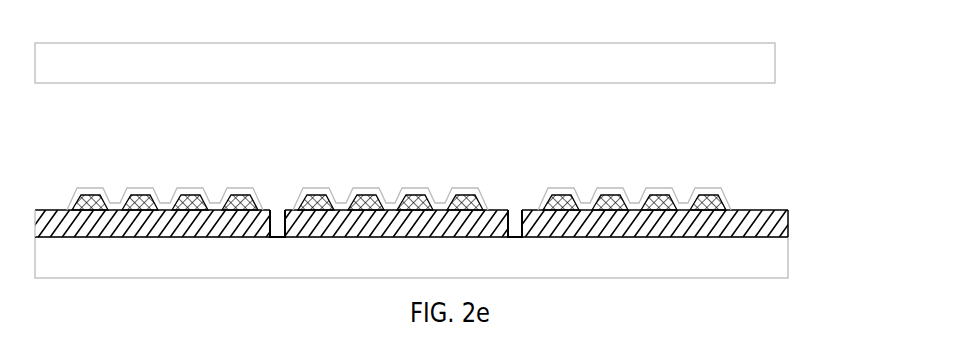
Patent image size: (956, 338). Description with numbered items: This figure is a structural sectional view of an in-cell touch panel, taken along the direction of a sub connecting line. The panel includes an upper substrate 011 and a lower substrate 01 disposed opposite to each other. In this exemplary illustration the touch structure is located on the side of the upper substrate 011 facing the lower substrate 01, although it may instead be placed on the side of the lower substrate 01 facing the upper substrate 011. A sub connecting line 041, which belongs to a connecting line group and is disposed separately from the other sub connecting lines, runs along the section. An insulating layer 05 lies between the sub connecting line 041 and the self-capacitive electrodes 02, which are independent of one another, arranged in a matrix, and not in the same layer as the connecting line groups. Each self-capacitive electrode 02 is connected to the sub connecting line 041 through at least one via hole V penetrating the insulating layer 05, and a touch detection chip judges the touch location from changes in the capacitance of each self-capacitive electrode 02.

The upper substrate 011 is at (732, 63).
The lower substrate 01 is at (737, 258).
The sub connecting line 041 is at (743, 221).
The insulating layer 05 is at (713, 203).
The self-capacitive electrode 02 is at (718, 193).
The via hole V is at (635, 208).